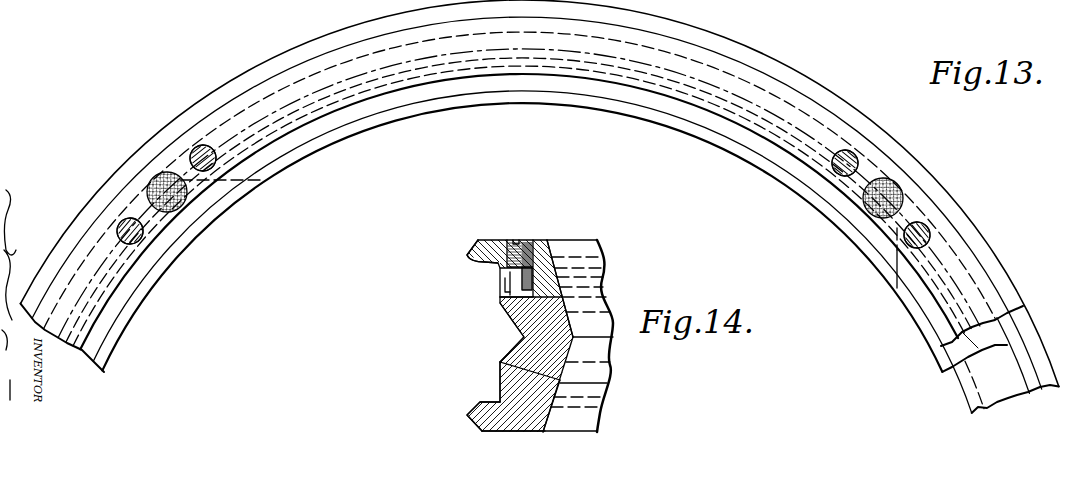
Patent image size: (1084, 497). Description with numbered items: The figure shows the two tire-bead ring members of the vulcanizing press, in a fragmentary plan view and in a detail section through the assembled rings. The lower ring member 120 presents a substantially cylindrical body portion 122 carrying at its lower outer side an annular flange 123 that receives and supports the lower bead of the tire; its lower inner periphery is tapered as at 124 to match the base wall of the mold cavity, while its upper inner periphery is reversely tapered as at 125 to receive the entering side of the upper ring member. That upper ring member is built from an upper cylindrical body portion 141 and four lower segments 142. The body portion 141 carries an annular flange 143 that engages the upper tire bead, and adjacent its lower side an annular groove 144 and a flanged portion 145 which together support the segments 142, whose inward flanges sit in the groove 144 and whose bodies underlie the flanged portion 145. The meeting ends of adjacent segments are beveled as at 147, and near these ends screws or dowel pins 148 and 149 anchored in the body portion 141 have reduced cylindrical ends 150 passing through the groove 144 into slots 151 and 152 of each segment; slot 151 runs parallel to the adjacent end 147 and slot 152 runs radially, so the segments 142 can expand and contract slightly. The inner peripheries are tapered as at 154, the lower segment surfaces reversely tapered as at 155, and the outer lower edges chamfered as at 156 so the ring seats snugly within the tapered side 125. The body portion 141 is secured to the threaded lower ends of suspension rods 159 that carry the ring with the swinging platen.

In FIG. 14, the lower ring member 120 is at (520, 427).
In FIG. 14, the body portion 122 is at (513, 378).
In FIG. 14, the annular flange 123 is at (482, 410).
In FIG. 14, the tapered inner periphery 124 is at (552, 415).
In FIG. 14, the reversely tapered upper side 125 is at (557, 397).
In FIG. 14, the upper cylindrical body portion 141 is at (538, 254).
In FIG. 14, the lower segments 142 is at (537, 313).
In FIG. 14, the annular flange 143 is at (481, 252).
In FIG. 14, the annular groove 144 is at (533, 281).
In FIG. 14, the flanged portion 145 is at (520, 297).
In FIG. 13, the beveled meeting ends 147 is at (260, 180).
In FIG. 13, the screw or dowel pin 148 is at (128, 233).
In FIG. 13, the screw or dowel pin 149 is at (210, 167).
In FIG. 14, the screw or dowel pin 149 is at (531, 238).
In FIG. 14, the cylindrical ends of reduced diameter 150 is at (518, 271).
In FIG. 13, the slot 151 is at (115, 227).
In FIG. 13, the slot 152 is at (196, 146).
In FIG. 14, the slot 152 is at (511, 285).
In FIG. 14, the tapered inner periphery 154 is at (561, 288).
In FIG. 14, the reversely tapered inner periphery 155 is at (573, 352).
In FIG. 14, the chamfer 156 is at (515, 332).
In FIG. 13, the suspension rods 159 is at (160, 178).